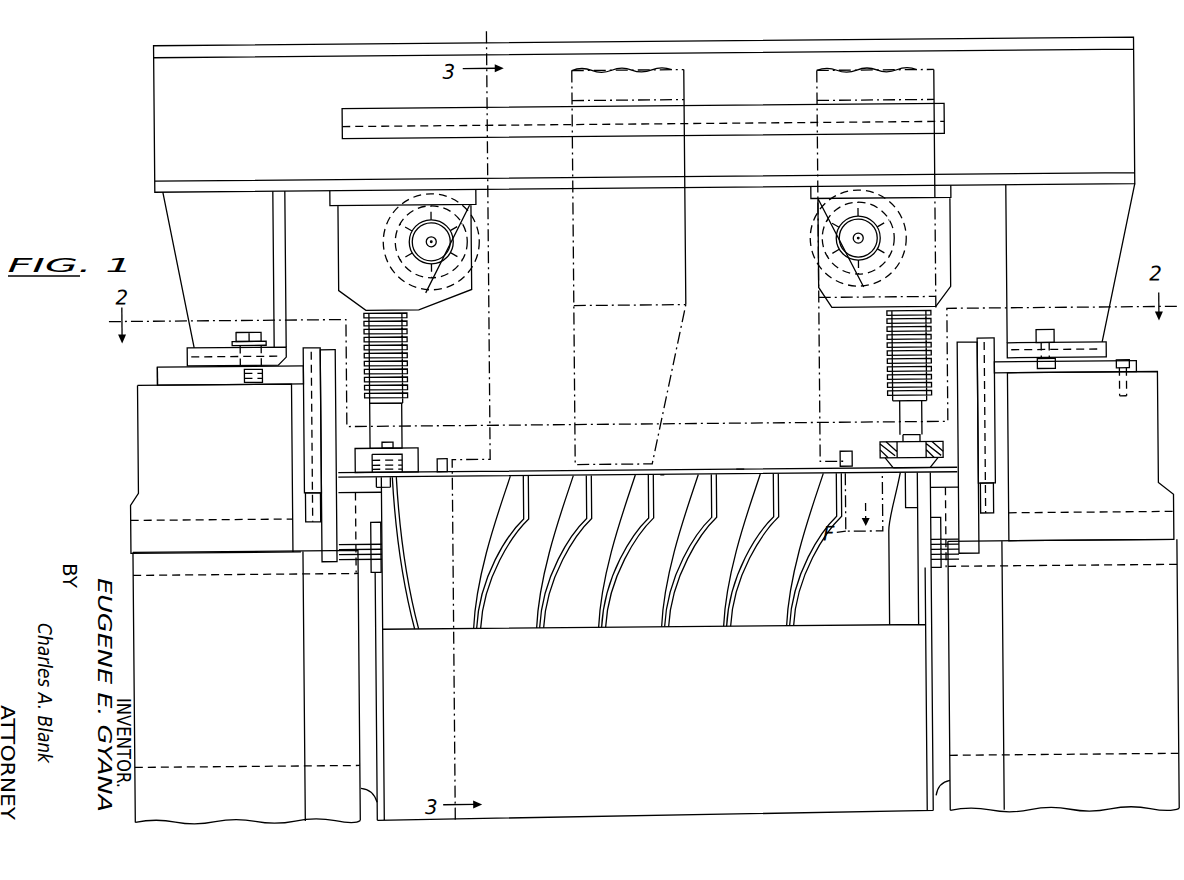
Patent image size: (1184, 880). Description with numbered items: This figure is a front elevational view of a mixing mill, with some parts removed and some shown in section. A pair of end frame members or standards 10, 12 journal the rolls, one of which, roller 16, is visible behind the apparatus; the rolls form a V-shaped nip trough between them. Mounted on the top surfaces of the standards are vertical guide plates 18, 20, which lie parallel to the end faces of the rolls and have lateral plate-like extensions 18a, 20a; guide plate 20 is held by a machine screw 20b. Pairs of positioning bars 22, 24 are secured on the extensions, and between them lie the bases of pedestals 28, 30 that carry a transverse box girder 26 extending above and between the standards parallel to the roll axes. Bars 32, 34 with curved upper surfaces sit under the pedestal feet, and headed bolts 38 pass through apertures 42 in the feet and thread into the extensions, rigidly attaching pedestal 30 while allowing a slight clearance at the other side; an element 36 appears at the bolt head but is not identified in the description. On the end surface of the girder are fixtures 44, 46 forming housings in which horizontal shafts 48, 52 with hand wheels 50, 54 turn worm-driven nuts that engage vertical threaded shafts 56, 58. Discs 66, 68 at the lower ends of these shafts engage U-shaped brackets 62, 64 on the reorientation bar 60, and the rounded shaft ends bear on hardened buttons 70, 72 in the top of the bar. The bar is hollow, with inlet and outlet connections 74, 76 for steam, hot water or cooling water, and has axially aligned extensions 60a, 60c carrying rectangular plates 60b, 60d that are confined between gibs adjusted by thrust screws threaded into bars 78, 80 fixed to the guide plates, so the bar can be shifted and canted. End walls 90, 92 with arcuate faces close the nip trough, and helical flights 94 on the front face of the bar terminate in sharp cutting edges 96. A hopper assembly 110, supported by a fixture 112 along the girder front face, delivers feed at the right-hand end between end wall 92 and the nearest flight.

The end frame member 10 is at (196, 721).
The end frame member 12 is at (1060, 701).
The roller 16 is at (645, 706).
The guide plate 18 is at (305, 432).
The lateral plate-like extension 18a is at (166, 383).
The guide plate 20 is at (993, 440).
The lateral plate-like extension 20a is at (1100, 372).
The machine screw 20b is at (1123, 401).
The positioning bars 22 is at (182, 356).
The positioning bars 24 is at (1112, 348).
The transverse box girder 26 is at (218, 142).
The pedestal 28 is at (210, 241).
The pedestal 30 is at (1053, 233).
The bar 32 is at (266, 380).
The bar 34 is at (1042, 373).
The bolt head 36 is at (240, 330).
The headed bolts 38 is at (258, 330).
The apertures 42 is at (224, 364).
The fixture 44 is at (345, 284).
The fixture 46 is at (953, 230).
The horizontal shaft 48 is at (438, 242).
The hand wheel 50 is at (480, 238).
The horizontal shaft 52 is at (825, 247).
The hand wheel 54 is at (822, 232).
The threaded shaft 56 is at (408, 352).
The threaded shaft 58 is at (890, 352).
The reorientation bar 60 is at (740, 469).
The extension 60a is at (356, 572).
The rectangular plate 60b is at (312, 512).
The extension 60c is at (956, 568).
The rectangular plate 60d is at (970, 528).
The U-shaped bracket 62 is at (410, 446).
The U-shaped bracket 64 is at (877, 454).
The disc 66 is at (404, 476).
The disc 68 is at (864, 502).
The hardened button 70 is at (344, 481).
The hardened button 72 is at (940, 521).
The inlet connection 74 is at (447, 458).
The outlet connection 76 is at (840, 458).
The bar 78 is at (328, 456).
The bar 80 is at (972, 466).
The end wall 90 is at (406, 560).
The end wall 92 is at (892, 568).
The flights 94 is at (612, 548).
The cutting edges 96 is at (662, 475).
The hopper assembly 110 is at (687, 252).
The fixture 112 is at (728, 110).